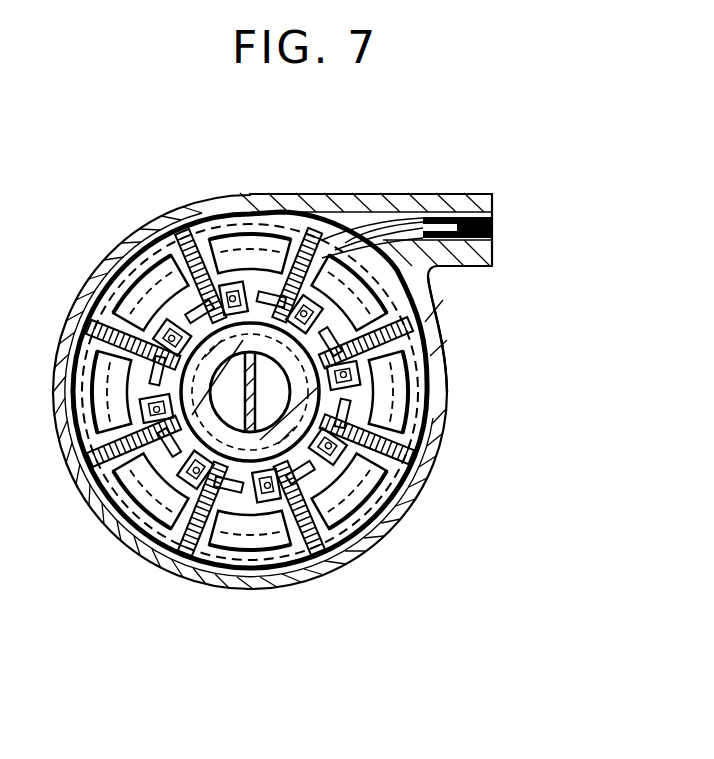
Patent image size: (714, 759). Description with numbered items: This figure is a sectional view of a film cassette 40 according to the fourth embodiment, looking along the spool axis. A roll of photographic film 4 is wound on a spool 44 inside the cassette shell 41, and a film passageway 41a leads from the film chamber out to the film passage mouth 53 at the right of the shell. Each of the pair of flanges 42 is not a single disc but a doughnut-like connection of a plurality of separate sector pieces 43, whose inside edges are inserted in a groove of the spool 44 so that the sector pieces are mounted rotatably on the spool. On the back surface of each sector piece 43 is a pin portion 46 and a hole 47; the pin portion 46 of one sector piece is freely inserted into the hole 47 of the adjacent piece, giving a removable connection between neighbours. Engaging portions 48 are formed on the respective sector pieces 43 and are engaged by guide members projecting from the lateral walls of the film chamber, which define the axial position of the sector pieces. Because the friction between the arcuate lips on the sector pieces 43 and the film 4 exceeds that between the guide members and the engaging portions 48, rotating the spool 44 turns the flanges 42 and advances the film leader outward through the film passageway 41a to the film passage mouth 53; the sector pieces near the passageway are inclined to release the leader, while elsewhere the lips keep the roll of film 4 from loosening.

The photographic film 4 is at (352, 225).
The film cassette 40 is at (407, 546).
The cassette shell 41 is at (183, 580).
The film passageway 41a is at (402, 222).
The flanges 42 is at (457, 344).
The sector pieces 43 is at (437, 433).
The spool 44 is at (177, 453).
The pin portion 46 is at (160, 268).
The hole 47 is at (211, 262).
The engaging portions 48 is at (445, 400).
The film passage mouth 53 is at (510, 228).